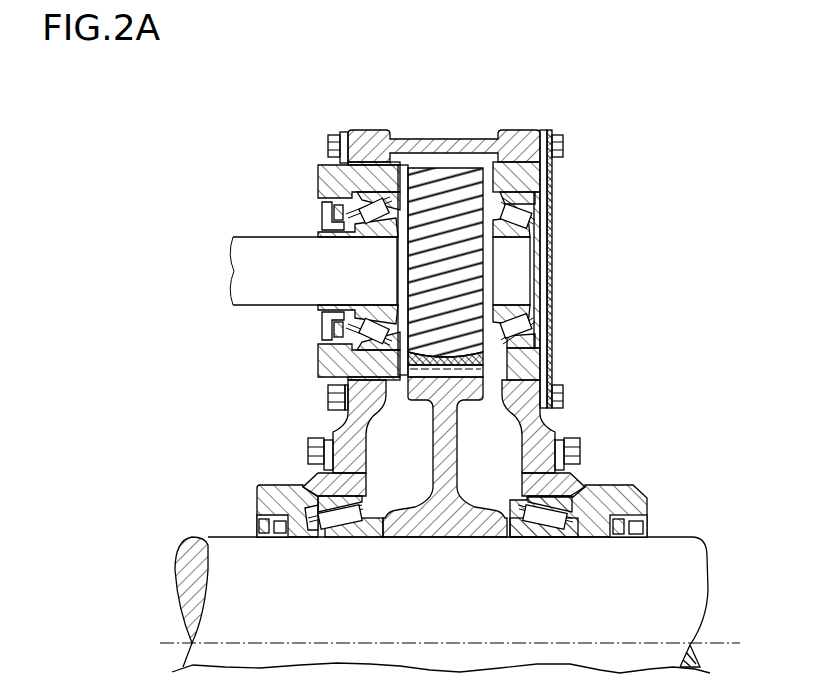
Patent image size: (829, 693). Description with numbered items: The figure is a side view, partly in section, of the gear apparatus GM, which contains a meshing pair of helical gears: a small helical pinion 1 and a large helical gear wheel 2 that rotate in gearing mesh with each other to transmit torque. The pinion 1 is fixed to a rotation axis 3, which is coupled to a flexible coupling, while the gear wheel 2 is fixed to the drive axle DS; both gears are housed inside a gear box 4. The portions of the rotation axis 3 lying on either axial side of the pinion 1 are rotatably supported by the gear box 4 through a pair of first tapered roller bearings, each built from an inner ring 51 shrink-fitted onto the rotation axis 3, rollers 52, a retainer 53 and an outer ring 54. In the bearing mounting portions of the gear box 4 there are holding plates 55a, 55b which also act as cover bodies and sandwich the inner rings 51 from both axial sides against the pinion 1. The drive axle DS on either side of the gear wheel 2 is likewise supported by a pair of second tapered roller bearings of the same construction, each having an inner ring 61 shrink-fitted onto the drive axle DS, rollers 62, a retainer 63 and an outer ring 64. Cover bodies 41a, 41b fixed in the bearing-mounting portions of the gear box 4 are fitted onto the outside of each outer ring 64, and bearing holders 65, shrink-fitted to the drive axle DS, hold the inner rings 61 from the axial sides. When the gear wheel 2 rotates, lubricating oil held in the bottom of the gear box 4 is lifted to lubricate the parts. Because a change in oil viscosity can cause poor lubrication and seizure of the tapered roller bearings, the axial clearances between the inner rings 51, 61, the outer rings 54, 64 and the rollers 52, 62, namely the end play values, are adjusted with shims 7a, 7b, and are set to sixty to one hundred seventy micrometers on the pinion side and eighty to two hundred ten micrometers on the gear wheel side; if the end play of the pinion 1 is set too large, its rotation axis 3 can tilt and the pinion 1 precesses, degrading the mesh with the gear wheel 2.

The gear apparatus GM is at (342, 96).
The pinion 1 is at (443, 180).
The gear wheel 2 is at (456, 462).
The rotation axis 3 is at (258, 255).
The gear box 4 is at (531, 125).
The shim 7a is at (356, 130).
The shim 7b is at (316, 440).
The inner ring 51 is at (512, 235).
The rollers 52 is at (551, 271).
The retainer 53 is at (520, 216).
The outer ring 54 is at (538, 203).
The holding plate 55a is at (538, 366).
The holding plate 55b is at (318, 178).
The inner ring 61 is at (575, 527).
The rollers 62 is at (565, 519).
The retainer 63 is at (556, 510).
The outer ring 64 is at (545, 498).
The cover body 41a is at (645, 508).
The cover body 41b is at (276, 496).
The bearing holder 65 is at (648, 523).
The drive axle DS is at (452, 628).